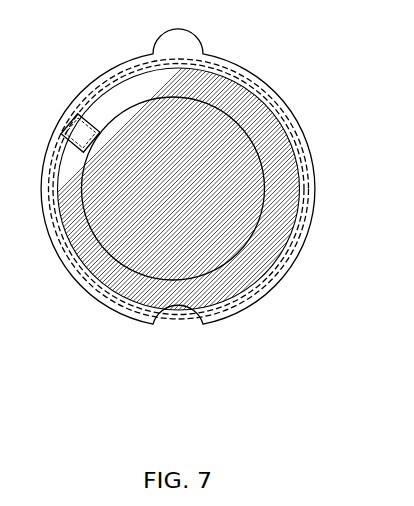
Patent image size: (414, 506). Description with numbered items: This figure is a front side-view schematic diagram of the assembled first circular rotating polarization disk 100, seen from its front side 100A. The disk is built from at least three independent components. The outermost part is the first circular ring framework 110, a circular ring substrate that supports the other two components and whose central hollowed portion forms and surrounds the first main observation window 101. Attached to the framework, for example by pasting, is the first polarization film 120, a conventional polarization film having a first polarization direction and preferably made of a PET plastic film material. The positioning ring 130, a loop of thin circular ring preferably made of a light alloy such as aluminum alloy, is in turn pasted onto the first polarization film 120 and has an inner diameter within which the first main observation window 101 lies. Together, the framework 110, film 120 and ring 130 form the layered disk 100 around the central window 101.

The first circular rotating polarization disk 100 is at (207, 205).
The front side 100A is at (232, 313).
The first main observation window 101 is at (213, 107).
The first circular ring framework 110 is at (266, 293).
The first polarization film 120 is at (305, 200).
The positioning ring 130 is at (308, 175).